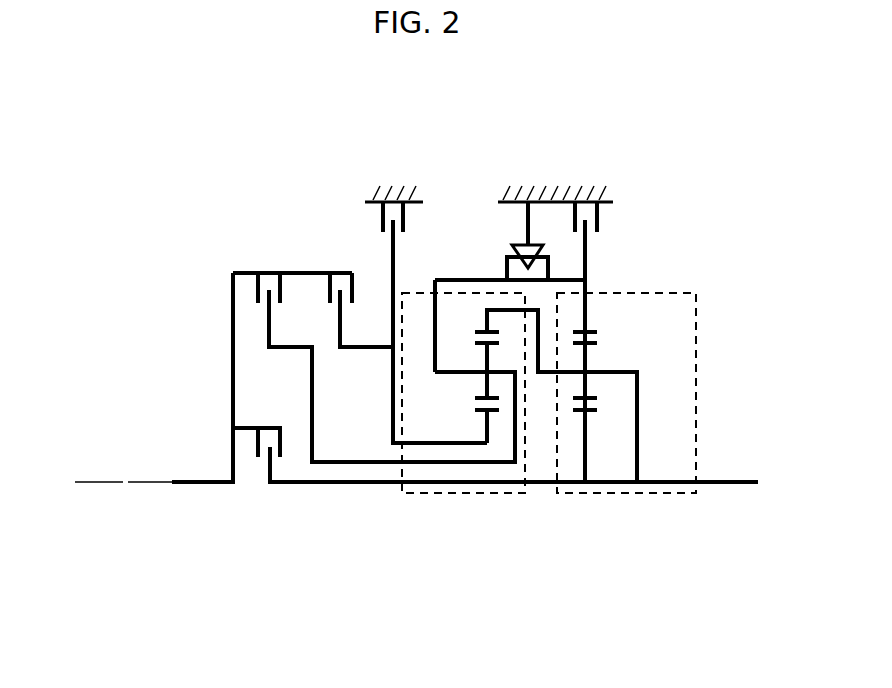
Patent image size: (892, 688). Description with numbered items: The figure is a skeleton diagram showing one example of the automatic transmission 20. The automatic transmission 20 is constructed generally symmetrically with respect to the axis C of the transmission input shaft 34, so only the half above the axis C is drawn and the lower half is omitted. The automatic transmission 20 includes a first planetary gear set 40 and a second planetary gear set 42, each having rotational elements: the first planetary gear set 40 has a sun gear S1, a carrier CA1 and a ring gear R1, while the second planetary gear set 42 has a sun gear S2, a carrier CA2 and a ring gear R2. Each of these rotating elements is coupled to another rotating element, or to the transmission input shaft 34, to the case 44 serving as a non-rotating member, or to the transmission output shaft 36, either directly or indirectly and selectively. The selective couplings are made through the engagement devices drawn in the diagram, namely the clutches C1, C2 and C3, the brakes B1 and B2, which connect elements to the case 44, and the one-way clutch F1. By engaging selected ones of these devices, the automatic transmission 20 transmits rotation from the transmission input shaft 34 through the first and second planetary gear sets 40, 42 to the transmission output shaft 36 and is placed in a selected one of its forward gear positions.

The automatic transmission 20 is at (456, 104).
The axis C is at (92, 480).
The transmission input shaft 34 is at (190, 482).
The transmission output shaft 36 is at (672, 480).
The first planetary gear set 40 is at (483, 497).
The second planetary gear set 42 is at (585, 497).
The case 44 is at (392, 195).
The clutch C1 is at (435, 441).
The clutch C2 is at (374, 354).
The clutch C3 is at (360, 296).
The brake B1 is at (417, 322).
The brake B2 is at (604, 342).
The one-way clutch F1 is at (510, 287).
The ring gear R1 is at (484, 330).
The carrier CA1 is at (471, 375).
The sun gear S1 is at (480, 412).
The ring gear R2 is at (590, 330).
The carrier CA2 is at (622, 370).
The sun gear S2 is at (588, 414).